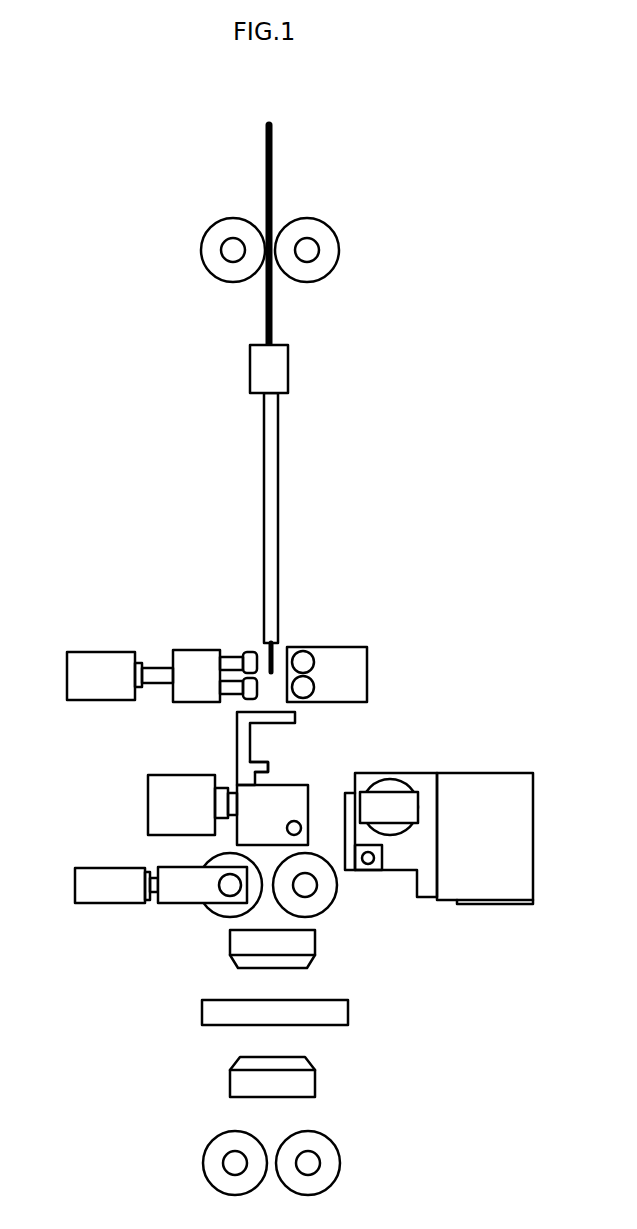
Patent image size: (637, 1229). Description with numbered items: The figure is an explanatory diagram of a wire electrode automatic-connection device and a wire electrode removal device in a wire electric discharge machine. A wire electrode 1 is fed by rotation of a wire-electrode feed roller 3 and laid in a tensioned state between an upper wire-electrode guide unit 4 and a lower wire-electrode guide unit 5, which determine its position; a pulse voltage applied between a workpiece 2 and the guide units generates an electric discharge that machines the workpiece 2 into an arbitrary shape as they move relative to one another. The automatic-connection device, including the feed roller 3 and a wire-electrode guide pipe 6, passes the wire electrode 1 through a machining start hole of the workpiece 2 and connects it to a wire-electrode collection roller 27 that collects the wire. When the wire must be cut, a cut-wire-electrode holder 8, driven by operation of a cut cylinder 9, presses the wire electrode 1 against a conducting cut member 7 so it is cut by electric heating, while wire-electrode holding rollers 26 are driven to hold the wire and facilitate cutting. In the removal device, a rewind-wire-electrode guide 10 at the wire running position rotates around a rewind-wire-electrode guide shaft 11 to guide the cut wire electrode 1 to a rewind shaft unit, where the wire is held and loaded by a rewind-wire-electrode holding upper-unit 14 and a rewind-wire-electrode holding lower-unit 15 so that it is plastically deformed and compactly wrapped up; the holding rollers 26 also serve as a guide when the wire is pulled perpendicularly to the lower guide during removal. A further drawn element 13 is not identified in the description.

The wire electrode 1 is at (273, 153).
The workpiece 2 is at (348, 1015).
The wire-electrode feed roller 3 is at (342, 245).
The upper wire-electrode guide unit 4 is at (317, 948).
The lower wire-electrode guide unit 5 is at (317, 1080).
The wire-electrode guide pipe 6 is at (288, 353).
The conducting cut member 7 is at (367, 665).
The cut-wire-electrode holder 8 is at (173, 650).
The cut cylinder 9 is at (67, 652).
The rewind-wire-electrode guide 10 is at (237, 720).
The rewind-wire-electrode guide shaft 11 is at (308, 822).
The clamp drive unit 13 is at (150, 775).
The rewind-wire-electrode holding upper-unit 14 is at (268, 772).
The rewind-wire-electrode holding lower-unit 15 is at (350, 870).
The wire-electrode holding rollers 26 is at (75, 868).
The wire-electrode collection roller 27 is at (342, 1168).